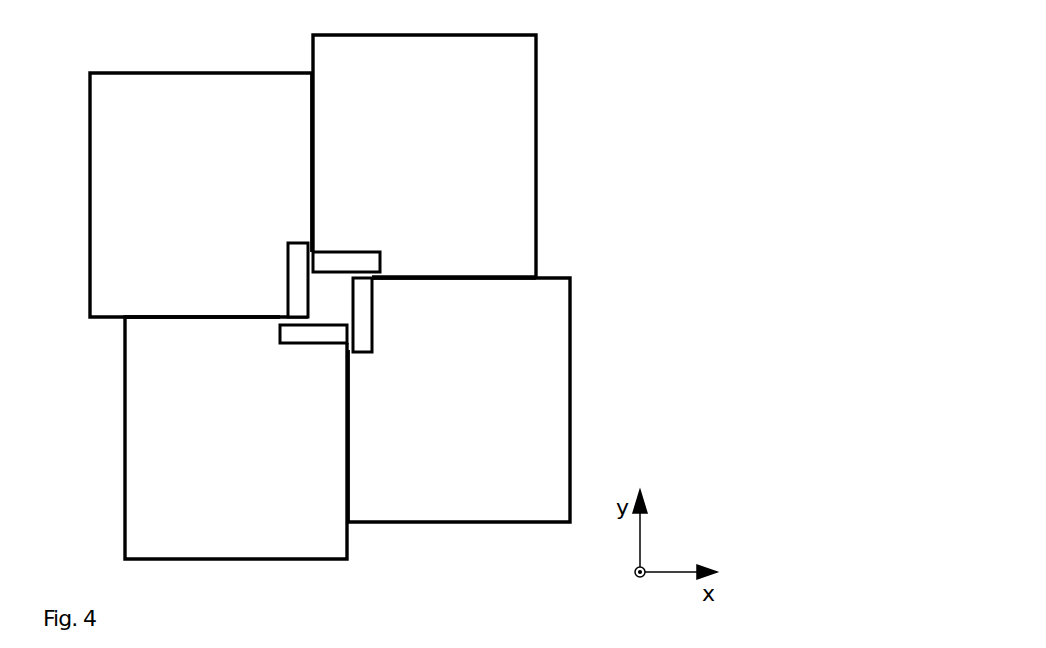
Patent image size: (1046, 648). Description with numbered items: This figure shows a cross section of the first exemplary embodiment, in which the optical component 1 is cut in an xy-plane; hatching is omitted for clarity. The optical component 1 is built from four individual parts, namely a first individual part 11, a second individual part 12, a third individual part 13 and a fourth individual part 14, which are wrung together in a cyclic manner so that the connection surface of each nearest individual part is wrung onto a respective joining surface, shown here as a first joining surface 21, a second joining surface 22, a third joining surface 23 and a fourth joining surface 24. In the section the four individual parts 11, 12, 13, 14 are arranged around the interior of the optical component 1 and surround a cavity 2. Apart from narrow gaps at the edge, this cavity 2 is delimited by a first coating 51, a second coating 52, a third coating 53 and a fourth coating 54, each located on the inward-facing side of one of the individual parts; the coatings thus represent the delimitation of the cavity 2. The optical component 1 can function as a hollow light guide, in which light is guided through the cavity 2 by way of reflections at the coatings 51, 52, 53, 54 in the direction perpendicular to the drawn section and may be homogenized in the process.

The optical component 1 is at (399, 301).
The cavity 2 is at (332, 293).
The first individual part 11 is at (328, 563).
The second individual part 12 is at (215, 72).
The third individual part 13 is at (533, 120).
The fourth individual part 14 is at (570, 368).
The first joining surface 21 is at (228, 317).
The second joining surface 22 is at (311, 113).
The third joining surface 23 is at (415, 277).
The fourth joining surface 24 is at (349, 415).
The first coating 51 is at (323, 333).
The second coating 52 is at (297, 270).
The third coating 53 is at (357, 262).
The fourth coating 54 is at (365, 312).